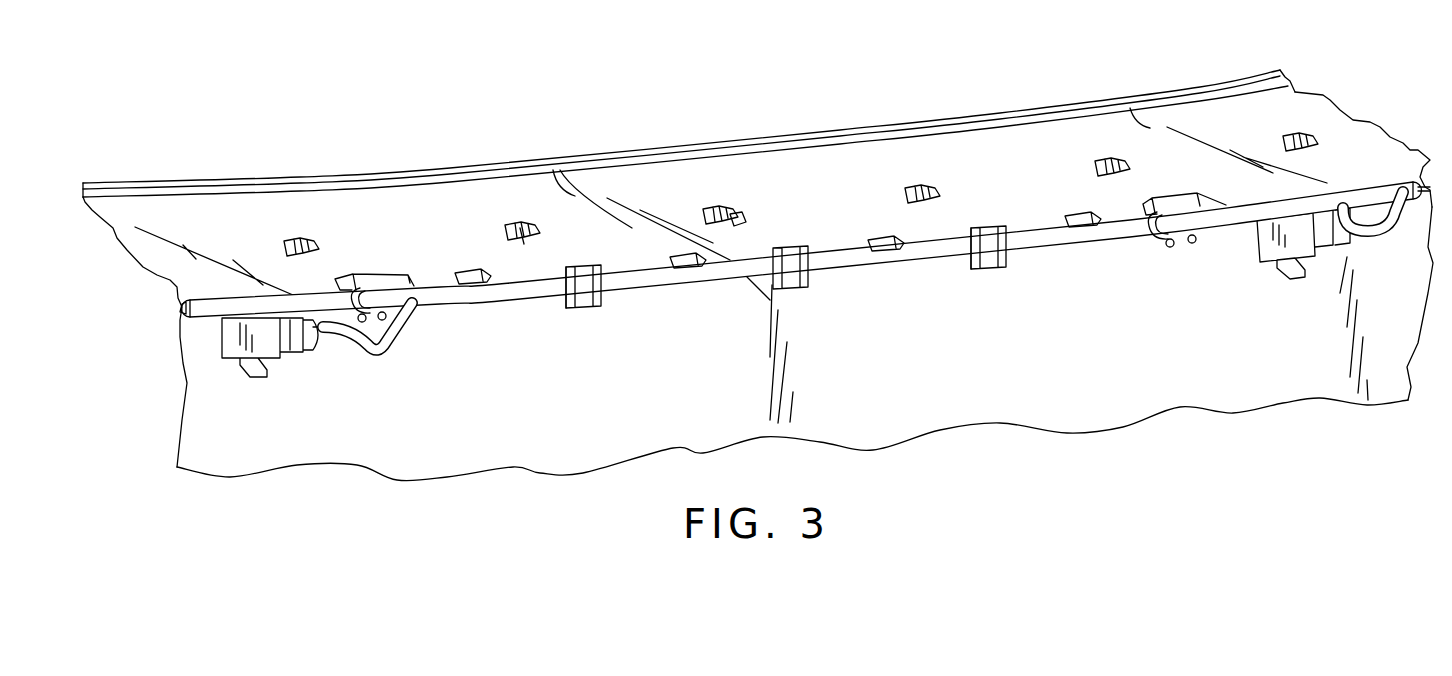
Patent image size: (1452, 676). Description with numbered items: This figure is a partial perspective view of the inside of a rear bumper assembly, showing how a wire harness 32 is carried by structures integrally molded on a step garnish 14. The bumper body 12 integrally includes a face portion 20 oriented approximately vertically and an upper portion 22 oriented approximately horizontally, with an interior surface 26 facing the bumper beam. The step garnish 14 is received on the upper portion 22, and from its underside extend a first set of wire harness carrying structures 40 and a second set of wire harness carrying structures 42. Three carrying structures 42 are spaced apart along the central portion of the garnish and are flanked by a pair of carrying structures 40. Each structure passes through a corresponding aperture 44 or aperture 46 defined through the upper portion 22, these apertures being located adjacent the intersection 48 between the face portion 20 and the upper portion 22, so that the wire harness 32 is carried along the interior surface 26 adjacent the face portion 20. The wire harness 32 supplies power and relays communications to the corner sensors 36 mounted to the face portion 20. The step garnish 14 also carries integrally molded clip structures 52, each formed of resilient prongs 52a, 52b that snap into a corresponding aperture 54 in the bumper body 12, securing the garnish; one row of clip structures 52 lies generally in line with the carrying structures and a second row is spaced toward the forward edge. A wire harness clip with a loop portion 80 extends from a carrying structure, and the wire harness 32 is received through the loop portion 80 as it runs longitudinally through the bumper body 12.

The bumper body 12 is at (1271, 408).
The step garnish 14 is at (1380, 124).
The face portion 20 is at (1388, 395).
The upper portion 22 is at (1297, 110).
The interior surface 26 is at (1130, 375).
The wire harness 32 is at (512, 284).
The corner sensor 36 is at (240, 345).
The wire harness carrying structure 40 is at (390, 276).
The wire harness carrying structure 42 is at (600, 308).
The aperture 44 is at (343, 275).
The aperture 46 is at (585, 267).
The intersection 48 is at (180, 320).
The clip structure 52 is at (295, 233).
The resilient prong 52a is at (747, 220).
The resilient prong 52b is at (710, 208).
The aperture 54 is at (530, 232).
The loop portion 80 is at (366, 290).